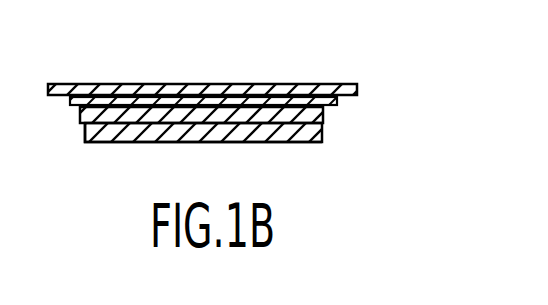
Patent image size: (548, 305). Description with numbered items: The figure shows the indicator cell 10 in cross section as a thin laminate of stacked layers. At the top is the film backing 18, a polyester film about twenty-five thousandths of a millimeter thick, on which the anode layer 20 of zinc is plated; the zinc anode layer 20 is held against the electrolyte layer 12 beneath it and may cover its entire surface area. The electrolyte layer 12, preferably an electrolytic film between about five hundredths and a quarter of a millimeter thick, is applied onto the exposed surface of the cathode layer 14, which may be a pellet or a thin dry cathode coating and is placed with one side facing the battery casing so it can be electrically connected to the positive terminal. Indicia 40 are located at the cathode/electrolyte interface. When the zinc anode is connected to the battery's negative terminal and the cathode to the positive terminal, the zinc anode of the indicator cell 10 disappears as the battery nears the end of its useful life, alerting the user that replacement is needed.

The indicator cell 10 is at (252, 70).
The electrolyte layer 12 is at (323, 113).
The cathode layer 14 is at (322, 132).
The film backing 18 is at (133, 84).
The anode layer 20 is at (72, 104).
The indicia 40 is at (85, 128).